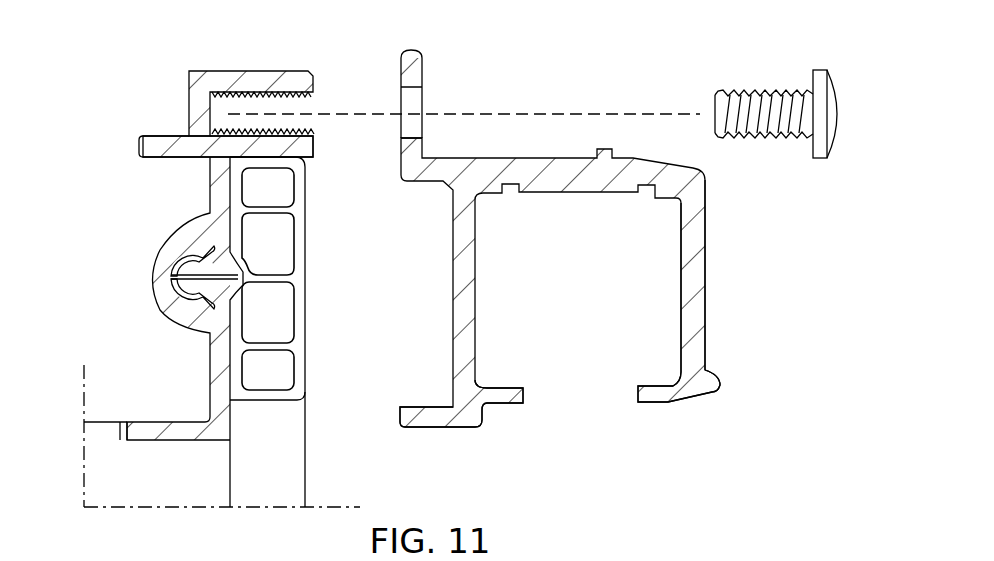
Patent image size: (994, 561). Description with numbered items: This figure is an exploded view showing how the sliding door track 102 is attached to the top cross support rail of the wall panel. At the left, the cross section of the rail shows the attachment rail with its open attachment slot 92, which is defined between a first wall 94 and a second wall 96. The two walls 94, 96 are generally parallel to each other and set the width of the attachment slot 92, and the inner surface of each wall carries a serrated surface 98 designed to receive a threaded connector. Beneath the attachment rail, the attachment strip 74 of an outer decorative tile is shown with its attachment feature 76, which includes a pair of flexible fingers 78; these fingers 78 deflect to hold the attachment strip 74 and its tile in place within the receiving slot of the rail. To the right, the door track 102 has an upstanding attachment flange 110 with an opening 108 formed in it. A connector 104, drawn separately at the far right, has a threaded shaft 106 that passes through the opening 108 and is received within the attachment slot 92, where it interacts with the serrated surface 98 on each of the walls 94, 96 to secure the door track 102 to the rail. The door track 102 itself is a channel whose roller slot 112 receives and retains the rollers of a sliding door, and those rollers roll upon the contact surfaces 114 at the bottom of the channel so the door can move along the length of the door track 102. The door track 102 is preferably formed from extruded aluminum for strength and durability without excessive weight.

The attachment strip 74 is at (302, 276).
The attachment feature 76 is at (203, 279).
The flexible fingers 78 is at (181, 255).
The attachment slot 92 is at (268, 108).
The first wall 94 is at (210, 78).
The second wall 96 is at (222, 148).
The serrated surface 98 is at (239, 96).
The sliding door track 102 is at (545, 149).
The connector 104 is at (839, 110).
The threaded shaft 106 is at (786, 104).
The opening 108 is at (413, 100).
The attachment flange 110 is at (404, 73).
The roller slot 112 is at (658, 277).
The contact surfaces 114 is at (505, 383).